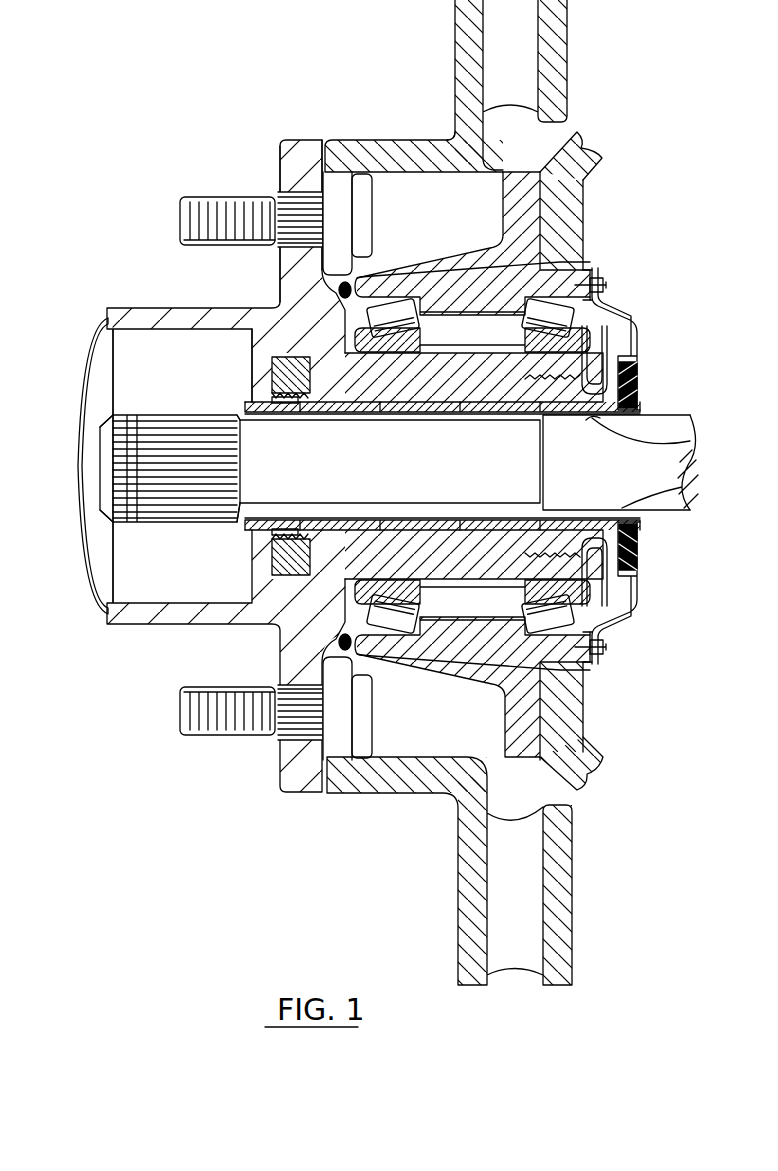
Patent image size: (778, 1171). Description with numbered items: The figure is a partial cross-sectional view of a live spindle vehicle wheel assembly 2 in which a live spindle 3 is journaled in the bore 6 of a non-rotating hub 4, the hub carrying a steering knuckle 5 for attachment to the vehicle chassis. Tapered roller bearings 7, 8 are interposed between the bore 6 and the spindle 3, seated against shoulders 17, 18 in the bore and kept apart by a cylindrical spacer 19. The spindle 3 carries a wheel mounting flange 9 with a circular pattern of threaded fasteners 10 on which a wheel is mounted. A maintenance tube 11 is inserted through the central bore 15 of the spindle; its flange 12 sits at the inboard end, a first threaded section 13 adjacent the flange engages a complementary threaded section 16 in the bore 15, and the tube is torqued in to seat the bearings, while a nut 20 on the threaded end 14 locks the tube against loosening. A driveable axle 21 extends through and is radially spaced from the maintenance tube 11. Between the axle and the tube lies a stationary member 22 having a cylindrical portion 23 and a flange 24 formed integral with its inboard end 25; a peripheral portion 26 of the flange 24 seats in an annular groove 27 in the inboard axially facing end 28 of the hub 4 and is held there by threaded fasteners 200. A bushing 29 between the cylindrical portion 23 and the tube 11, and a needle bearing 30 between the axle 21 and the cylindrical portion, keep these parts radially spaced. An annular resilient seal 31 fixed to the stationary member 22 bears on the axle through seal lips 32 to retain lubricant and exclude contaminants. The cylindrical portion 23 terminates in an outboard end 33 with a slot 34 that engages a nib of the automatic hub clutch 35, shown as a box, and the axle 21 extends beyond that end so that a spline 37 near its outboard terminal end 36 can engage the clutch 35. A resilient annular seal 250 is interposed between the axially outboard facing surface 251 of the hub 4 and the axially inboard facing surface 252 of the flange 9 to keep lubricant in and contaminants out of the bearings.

The live spindle vehicle wheel assembly 2 is at (643, 437).
The live spindle 3 is at (226, 348).
The non-rotating hub 4 is at (512, 178).
The steering knuckle 5 is at (583, 143).
The bore 6 is at (452, 655).
The tapered roller bearing 7 is at (413, 330).
The tapered roller bearing 8 is at (532, 330).
The wheel mounting flange 9 is at (292, 142).
The threaded fasteners 10 is at (214, 198).
The maintenance tube 11 is at (473, 387).
The flange 12 is at (603, 325).
The first threaded section 13 is at (636, 388).
The threaded end 14 is at (251, 594).
The central bore 15 is at (445, 547).
The threaded section 16 is at (608, 340).
The shoulder 17 is at (436, 296).
The shoulder 18 is at (472, 212).
The cylindrical spacer 19 is at (483, 583).
The nut 20 is at (296, 578).
The driveable axle 21 is at (492, 445).
The stationary member 22 is at (635, 602).
The cylindrical portion 23 is at (298, 520).
The flange 24 is at (633, 612).
The inboard end 25 is at (677, 486).
The peripheral portion 26 is at (603, 282).
The annular shoulder or groove 27 is at (643, 437).
The inboard axially facing end 28 is at (602, 655).
The bushing 29 is at (262, 400).
The needle bearing 30 is at (693, 442).
The annular resilient seal 31 is at (643, 542).
The annular seal lips 32 is at (655, 420).
The outboard end 33 is at (242, 413).
The slot 34 is at (240, 513).
The automatic hub clutch 35 is at (132, 357).
The outboard terminal end 36 is at (134, 501).
The spline 37 is at (140, 520).
The threaded fasteners 200 is at (606, 286).
The resilient annular seal 250 is at (343, 636).
The axially outboard facing surface 251 is at (324, 264).
The axially inboard facing surface 252 is at (340, 290).